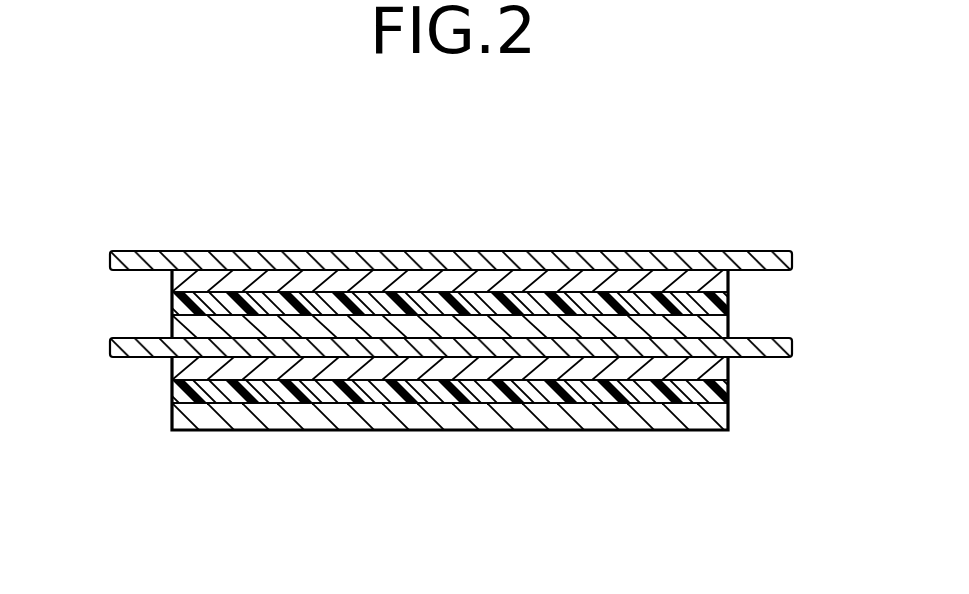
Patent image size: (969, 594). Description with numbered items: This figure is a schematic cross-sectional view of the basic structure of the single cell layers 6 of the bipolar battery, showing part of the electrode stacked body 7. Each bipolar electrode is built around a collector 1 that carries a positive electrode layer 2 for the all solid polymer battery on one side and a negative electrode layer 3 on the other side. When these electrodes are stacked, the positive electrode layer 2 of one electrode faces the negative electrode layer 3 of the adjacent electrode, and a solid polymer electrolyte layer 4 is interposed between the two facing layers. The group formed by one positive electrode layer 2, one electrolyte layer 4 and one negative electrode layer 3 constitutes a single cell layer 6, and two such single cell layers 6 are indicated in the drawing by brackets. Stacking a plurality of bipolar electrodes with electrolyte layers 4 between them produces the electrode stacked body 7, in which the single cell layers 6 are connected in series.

The collector 1 is at (627, 262).
The positive electrode layer 2 is at (237, 328).
The negative electrode layer 3 is at (500, 285).
The solid polymer electrolyte layer 4 is at (340, 311).
The single cell layer 6 is at (513, 345).
The electrode stacked body 7 is at (124, 184).